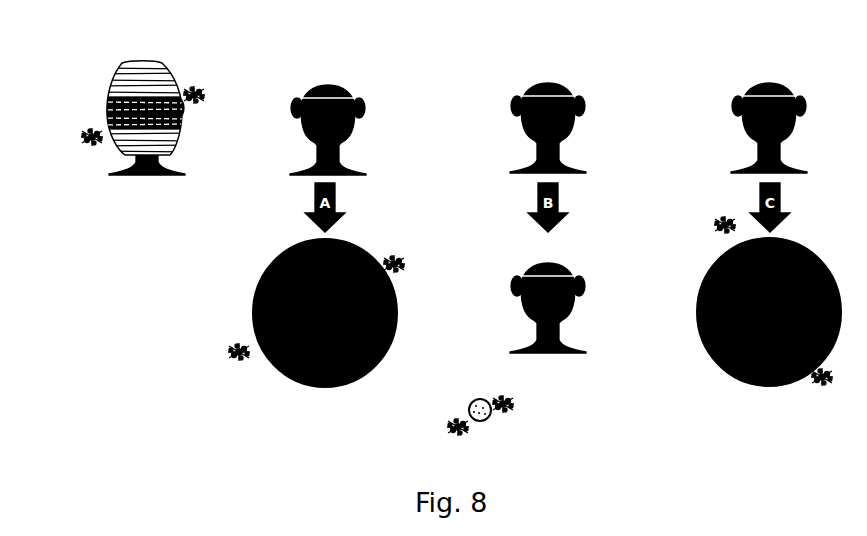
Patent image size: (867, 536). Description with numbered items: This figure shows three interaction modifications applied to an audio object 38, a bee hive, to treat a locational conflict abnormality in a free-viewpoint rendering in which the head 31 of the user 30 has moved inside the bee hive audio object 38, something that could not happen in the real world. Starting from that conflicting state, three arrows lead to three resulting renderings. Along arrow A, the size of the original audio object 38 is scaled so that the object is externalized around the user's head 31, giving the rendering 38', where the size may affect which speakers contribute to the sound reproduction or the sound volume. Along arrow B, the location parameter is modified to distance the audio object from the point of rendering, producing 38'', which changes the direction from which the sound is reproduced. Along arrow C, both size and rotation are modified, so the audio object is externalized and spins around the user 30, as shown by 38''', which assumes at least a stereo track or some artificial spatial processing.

The user 30 is at (338, 87).
The head of the user 31 is at (183, 137).
The audio object 38 is at (138, 95).
The externalized audio object 38' is at (304, 304).
The relocated audio object 38'' is at (477, 388).
The externalized and spinning audio object 38''' is at (748, 319).